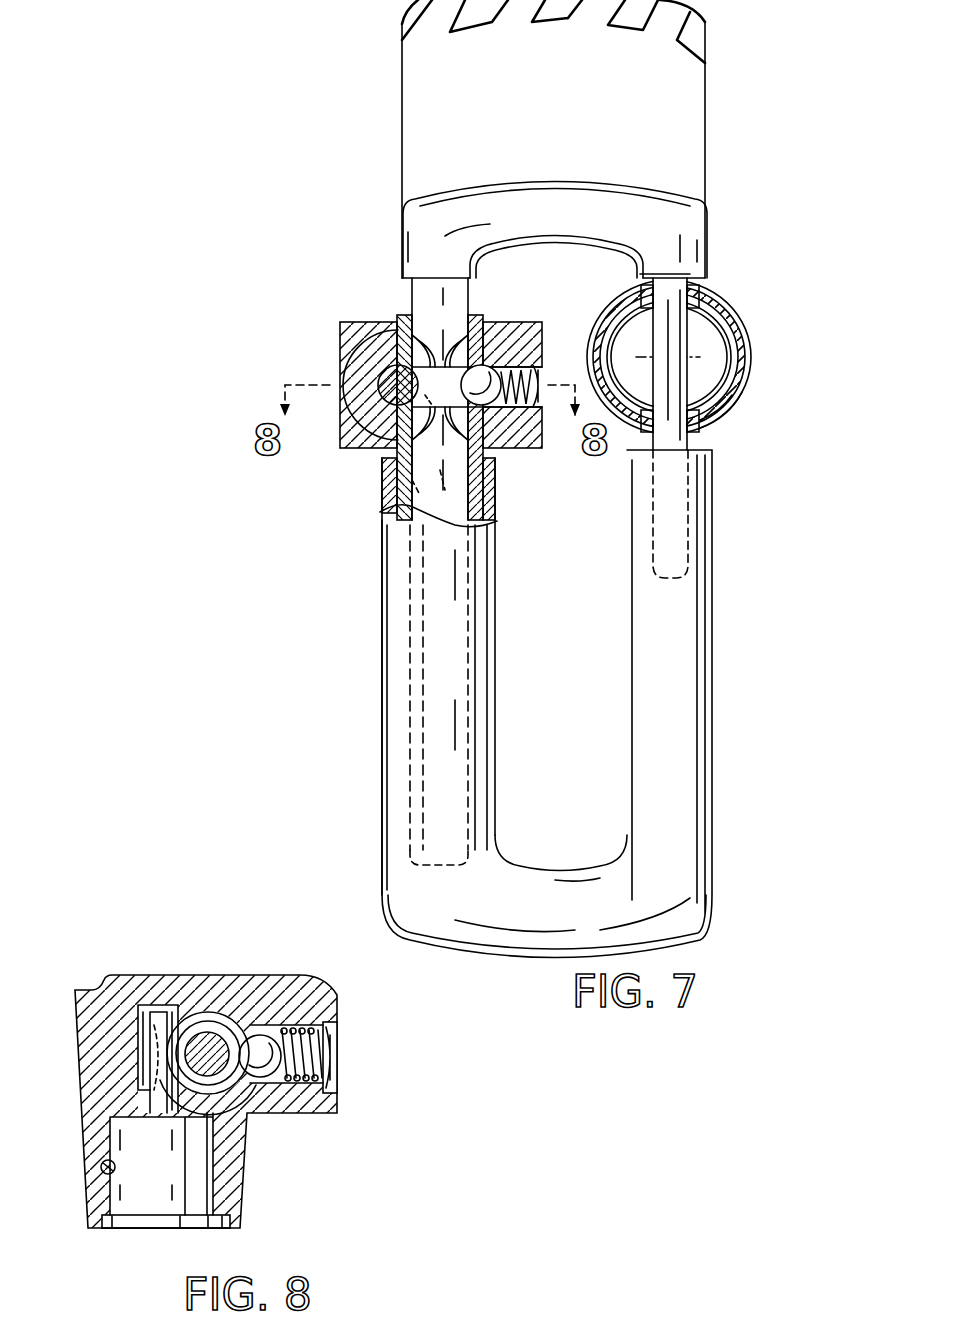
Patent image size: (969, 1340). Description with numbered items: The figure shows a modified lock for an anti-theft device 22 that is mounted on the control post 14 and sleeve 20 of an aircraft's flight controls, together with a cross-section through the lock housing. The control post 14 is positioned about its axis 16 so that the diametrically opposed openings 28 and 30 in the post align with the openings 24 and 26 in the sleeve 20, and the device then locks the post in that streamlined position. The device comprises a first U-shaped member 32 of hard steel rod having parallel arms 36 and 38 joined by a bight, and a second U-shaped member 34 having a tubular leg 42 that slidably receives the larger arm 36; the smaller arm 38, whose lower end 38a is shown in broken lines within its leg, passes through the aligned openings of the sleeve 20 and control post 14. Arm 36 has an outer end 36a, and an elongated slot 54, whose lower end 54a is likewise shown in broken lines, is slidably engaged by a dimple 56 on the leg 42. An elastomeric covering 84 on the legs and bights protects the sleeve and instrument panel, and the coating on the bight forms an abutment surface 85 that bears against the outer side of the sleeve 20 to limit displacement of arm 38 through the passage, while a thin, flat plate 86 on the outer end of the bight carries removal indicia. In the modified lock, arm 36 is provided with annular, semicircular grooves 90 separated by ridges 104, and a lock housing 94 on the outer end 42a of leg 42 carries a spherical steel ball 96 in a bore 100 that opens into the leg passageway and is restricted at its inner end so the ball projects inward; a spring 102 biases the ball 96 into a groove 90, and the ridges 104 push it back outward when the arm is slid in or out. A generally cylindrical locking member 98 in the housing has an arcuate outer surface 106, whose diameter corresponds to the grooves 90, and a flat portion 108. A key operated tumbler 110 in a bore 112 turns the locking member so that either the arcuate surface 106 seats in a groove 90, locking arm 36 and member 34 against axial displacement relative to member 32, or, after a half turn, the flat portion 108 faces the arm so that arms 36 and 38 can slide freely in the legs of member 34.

In FIG. 7, the anti-theft device 22 is at (308, 70).
In FIG. 7, the thin, flat plate 86 is at (683, 95).
In FIG. 7, the covering of elastomeric material 84 is at (665, 215).
In FIG. 7, the abutment surface 85 is at (655, 280).
In FIG. 7, the first U-shaped member 32 is at (400, 270).
In FIG. 7, the outer end of leg 42a is at (402, 320).
In FIG. 7, the tubular leg 42 is at (400, 500).
In FIG. 8, the tubular leg 42 is at (220, 1103).
In FIG. 7, the arm 36 is at (460, 505).
In FIG. 8, the arm 36 is at (205, 1040).
In FIG. 7, the second U-shaped member 34 is at (380, 680).
In FIG. 7, the elongated slot 54 is at (415, 730).
In FIG. 7, the bore bottom 54a is at (415, 840).
In FIG. 7, the outer end of arm 36a is at (455, 840).
In FIG. 7, the dimple 56 is at (400, 490).
In FIG. 7, the axis 16 is at (665, 356).
In FIG. 7, the control post 14 is at (730, 350).
In FIG. 7, the sleeve 20 is at (742, 325).
In FIG. 7, the opening 24 is at (700, 285).
In FIG. 7, the opening 28 is at (712, 305).
In FIG. 7, the opening 30 is at (720, 405).
In FIG. 7, the opening 26 is at (712, 430).
In FIG. 7, the arm 38 is at (680, 380).
In FIG. 7, the rod bore 38a is at (685, 563).
In FIG. 7, the lock housing 94 is at (340, 320).
In FIG. 8, the lock housing 94 is at (123, 970).
In FIG. 7, the locking member 98 is at (400, 385).
In FIG. 8, the locking member 98 is at (143, 1097).
In FIG. 7, the spherical steel ball 96 is at (486, 370).
In FIG. 8, the spherical steel ball 96 is at (262, 1040).
In FIG. 7, the annular, semicircular grooves 90 is at (480, 377).
In FIG. 8, the annular, semicircular grooves 90 is at (192, 1027).
In FIG. 7, the flat portion 108 is at (405, 395).
In FIG. 8, the flat portion 108 is at (147, 1022).
In FIG. 7, the arcuate outer surface 106 is at (428, 430).
In FIG. 8, the arcuate outer surface 106 is at (165, 1008).
In FIG. 7, the ridges 104 is at (397, 410).
In FIG. 8, the ridges 104 is at (222, 1015).
In FIG. 7, the bore 100 is at (502, 410).
In FIG. 8, the bore 100 is at (290, 1080).
In FIG. 7, the spring 102 is at (540, 400).
In FIG. 8, the spring 102 is at (337, 1062).
In FIG. 8, the bore 112 is at (208, 1212).
In FIG. 8, the key operated tumbler 110 is at (143, 1232).